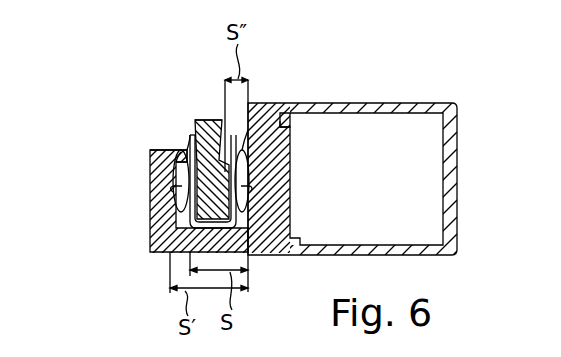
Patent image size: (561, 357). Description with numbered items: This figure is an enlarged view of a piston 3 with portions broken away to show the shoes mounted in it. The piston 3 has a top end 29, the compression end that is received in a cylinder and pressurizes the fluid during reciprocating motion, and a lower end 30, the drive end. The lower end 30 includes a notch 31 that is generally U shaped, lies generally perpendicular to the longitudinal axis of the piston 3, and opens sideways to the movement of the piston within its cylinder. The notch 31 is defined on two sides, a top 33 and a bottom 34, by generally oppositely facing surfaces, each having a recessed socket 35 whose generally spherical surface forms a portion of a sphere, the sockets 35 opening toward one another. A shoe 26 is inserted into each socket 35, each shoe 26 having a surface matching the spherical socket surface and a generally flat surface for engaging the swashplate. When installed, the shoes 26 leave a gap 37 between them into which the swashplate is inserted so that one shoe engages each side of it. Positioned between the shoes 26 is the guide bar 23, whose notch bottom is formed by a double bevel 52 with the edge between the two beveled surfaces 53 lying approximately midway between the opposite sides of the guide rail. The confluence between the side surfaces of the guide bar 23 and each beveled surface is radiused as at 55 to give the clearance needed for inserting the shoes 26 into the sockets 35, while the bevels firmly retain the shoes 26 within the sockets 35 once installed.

The piston 3 is at (374, 104).
The guide bar 23 is at (198, 122).
The shoe 26 is at (166, 183).
The top end 29 is at (458, 172).
The lower end 30 is at (150, 225).
The notch 31 is at (186, 130).
The top 33 is at (262, 112).
The bottom 34 is at (168, 148).
The recessed socket 35 is at (172, 192).
The gap 37 is at (186, 141).
The double bevel 52 is at (192, 128).
The beveled surfaces 53 is at (216, 136).
The radius 55 is at (170, 163).